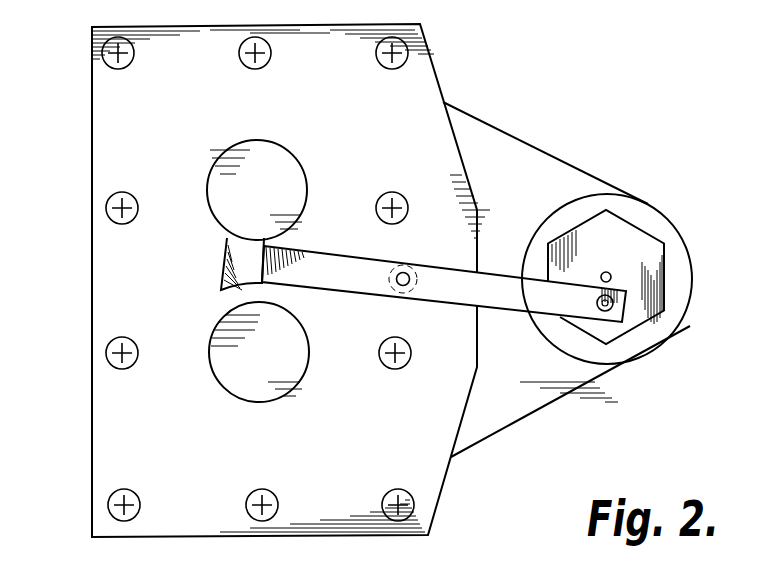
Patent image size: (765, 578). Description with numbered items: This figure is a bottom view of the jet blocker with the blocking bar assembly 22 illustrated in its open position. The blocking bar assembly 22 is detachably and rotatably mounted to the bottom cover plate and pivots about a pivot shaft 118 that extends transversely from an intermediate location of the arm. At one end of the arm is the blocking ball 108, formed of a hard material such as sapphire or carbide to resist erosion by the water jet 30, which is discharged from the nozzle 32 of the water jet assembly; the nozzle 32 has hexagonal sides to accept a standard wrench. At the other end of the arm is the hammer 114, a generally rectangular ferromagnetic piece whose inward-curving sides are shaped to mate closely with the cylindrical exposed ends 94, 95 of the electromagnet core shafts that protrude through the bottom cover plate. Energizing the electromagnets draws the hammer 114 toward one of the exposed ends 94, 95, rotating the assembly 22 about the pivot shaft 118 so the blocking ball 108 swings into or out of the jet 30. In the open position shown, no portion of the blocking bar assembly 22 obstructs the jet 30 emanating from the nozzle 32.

The blocking bar assembly 22 is at (322, 277).
The water jet 30 is at (611, 277).
The nozzle 32 is at (638, 226).
The exposed end 94 is at (238, 167).
The exposed end 95 is at (232, 372).
The blocking ball 108 is at (611, 306).
The hammer 114 is at (222, 257).
The pivot shaft 118 is at (417, 283).